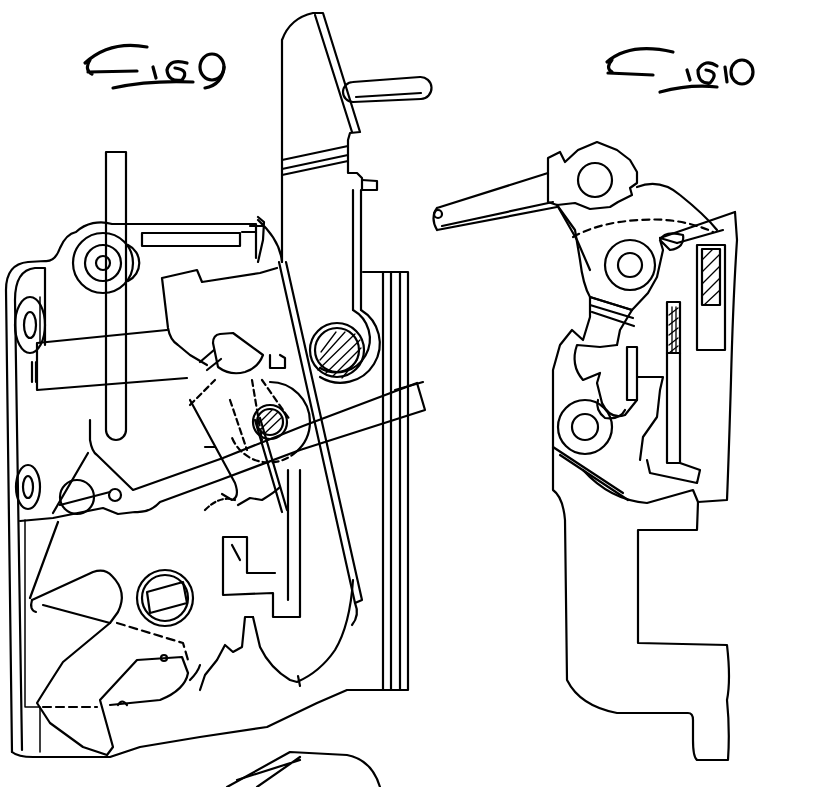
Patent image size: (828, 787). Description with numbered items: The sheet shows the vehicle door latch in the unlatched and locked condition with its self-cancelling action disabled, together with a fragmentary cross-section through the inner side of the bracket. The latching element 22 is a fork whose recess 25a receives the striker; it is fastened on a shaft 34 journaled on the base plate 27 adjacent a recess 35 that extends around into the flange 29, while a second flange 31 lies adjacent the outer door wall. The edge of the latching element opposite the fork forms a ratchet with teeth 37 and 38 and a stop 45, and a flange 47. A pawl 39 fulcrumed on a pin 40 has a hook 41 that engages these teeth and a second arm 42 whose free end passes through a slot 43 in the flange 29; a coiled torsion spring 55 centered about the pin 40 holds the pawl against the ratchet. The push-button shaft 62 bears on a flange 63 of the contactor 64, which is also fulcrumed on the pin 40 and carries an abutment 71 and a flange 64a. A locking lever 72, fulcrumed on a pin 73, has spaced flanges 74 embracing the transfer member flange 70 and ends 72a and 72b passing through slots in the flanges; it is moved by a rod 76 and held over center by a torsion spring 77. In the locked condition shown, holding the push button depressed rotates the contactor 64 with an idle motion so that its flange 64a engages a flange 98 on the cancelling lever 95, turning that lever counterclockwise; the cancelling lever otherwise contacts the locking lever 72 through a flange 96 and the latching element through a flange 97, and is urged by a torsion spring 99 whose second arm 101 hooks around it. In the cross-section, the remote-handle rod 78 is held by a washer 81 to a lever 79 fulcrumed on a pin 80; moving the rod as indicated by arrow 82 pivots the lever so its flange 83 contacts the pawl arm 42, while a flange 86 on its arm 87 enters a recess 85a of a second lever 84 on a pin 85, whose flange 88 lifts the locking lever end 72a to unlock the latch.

In FIG. 9, the latching element 22 is at (165, 658).
In FIG. 9, the recess 25a is at (88, 650).
In FIG. 9, the base plate 27 is at (78, 242).
In FIG. 10, the flange 29 is at (568, 548).
In FIG. 9, the flange 31 is at (395, 558).
In FIG. 9, the shaft 34 is at (160, 580).
In FIG. 9, the recess 35 is at (132, 703).
In FIG. 9, the tooth 37 is at (196, 682).
In FIG. 9, the tooth 38 is at (240, 657).
In FIG. 9, the pawl 39 is at (395, 527).
In FIG. 9, the pin 40 is at (343, 324).
In FIG. 9, the hook 41 is at (296, 690).
In FIG. 9, the arm 42 is at (90, 345).
In FIG. 10, the arm 42 is at (716, 262).
In FIG. 10, the slot 43 is at (720, 312).
In FIG. 9, the stop 45 is at (248, 622).
In FIG. 9, the flange 47 is at (250, 573).
In FIG. 9, the coiled torsion spring 55 is at (362, 610).
In FIG. 9, the shaft 62 is at (404, 97).
In FIG. 9, the flange 63 is at (342, 66).
In FIG. 9, the contactor 64 is at (280, 188).
In FIG. 9, the flange 64a is at (207, 362).
In FIG. 9, the flange 70 is at (240, 356).
In FIG. 9, the abutment 71 is at (274, 358).
In FIG. 9, the locking lever 72 is at (186, 472).
In FIG. 10, the locking lever 72 is at (684, 361).
In FIG. 10, the end 72a is at (678, 372).
In FIG. 9, the end 72b is at (420, 406).
In FIG. 9, the pin 73 is at (285, 425).
In FIG. 9, the flanges 74 is at (240, 440).
In FIG. 9, the rod 76 is at (106, 178).
In FIG. 9, the torsion spring 77 is at (60, 512).
In FIG. 10, the rod 78 is at (518, 193).
In FIG. 10, the lever 79 is at (671, 181).
In FIG. 10, the pin 80 is at (618, 262).
In FIG. 10, the washer 81 is at (614, 160).
In FIG. 10, the arrow 82 is at (522, 232).
In FIG. 10, the flange 83 is at (740, 222).
In FIG. 10, the second lever 84 is at (560, 461).
In FIG. 10, the pin 85 is at (575, 427).
In FIG. 10, the recess 85a is at (622, 418).
In FIG. 10, the flange 86 is at (635, 378).
In FIG. 10, the arm 87 is at (590, 320).
In FIG. 10, the flange 88 is at (690, 468).
In FIG. 9, the cancelling lever 95 is at (204, 449).
In FIG. 9, the flange 96 is at (206, 514).
In FIG. 9, the flange 97 is at (262, 558).
In FIG. 9, the flange 98 is at (182, 398).
In FIG. 9, the torsion spring 99 is at (293, 505).
In FIG. 9, the second arm 101 is at (258, 505).